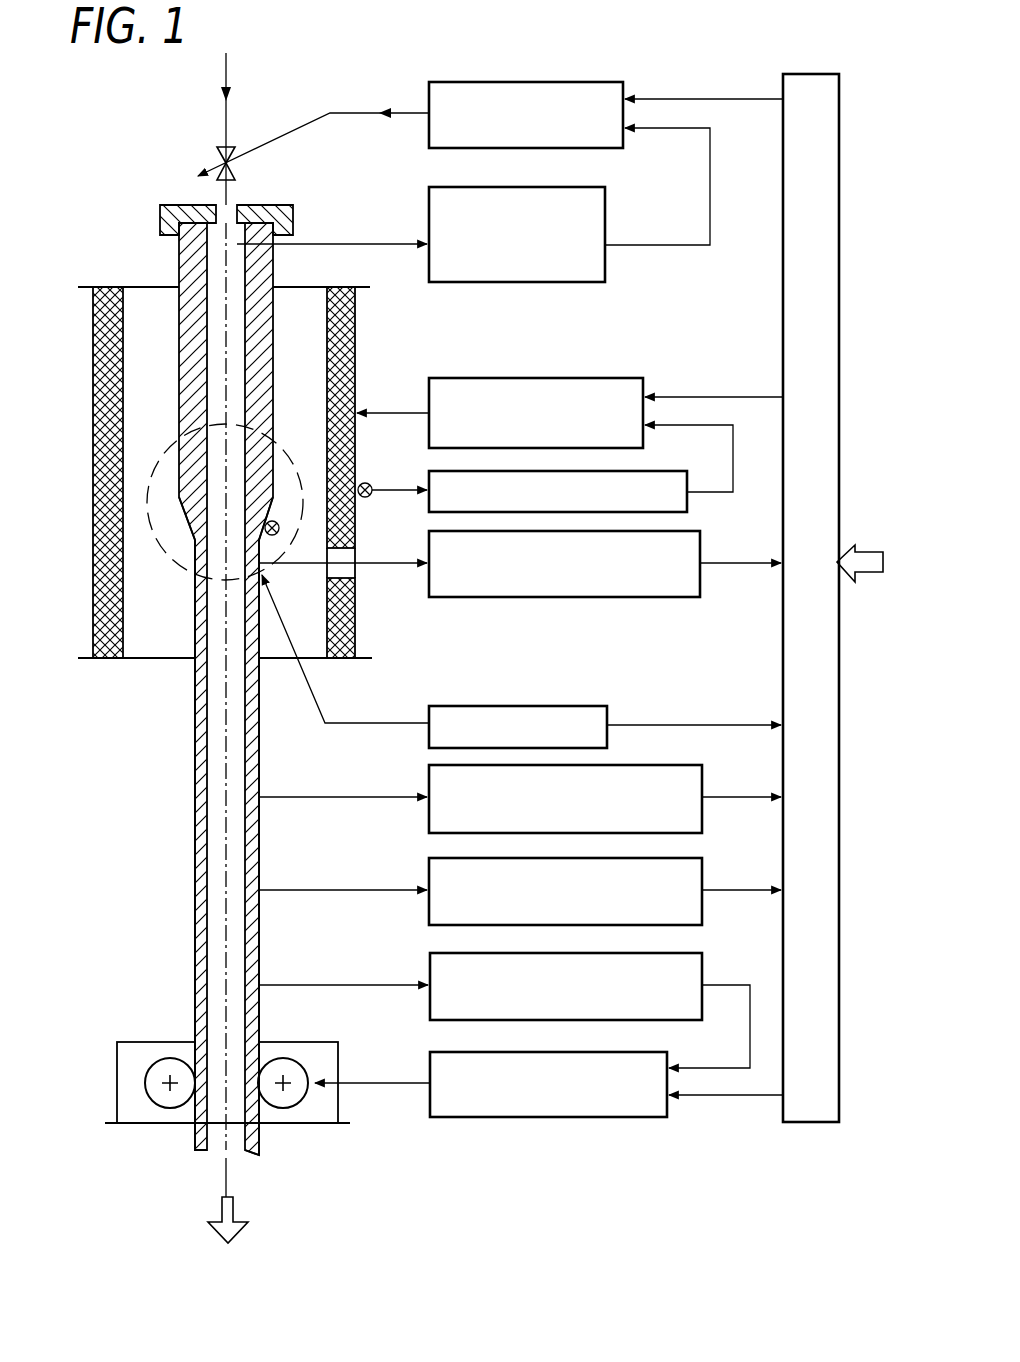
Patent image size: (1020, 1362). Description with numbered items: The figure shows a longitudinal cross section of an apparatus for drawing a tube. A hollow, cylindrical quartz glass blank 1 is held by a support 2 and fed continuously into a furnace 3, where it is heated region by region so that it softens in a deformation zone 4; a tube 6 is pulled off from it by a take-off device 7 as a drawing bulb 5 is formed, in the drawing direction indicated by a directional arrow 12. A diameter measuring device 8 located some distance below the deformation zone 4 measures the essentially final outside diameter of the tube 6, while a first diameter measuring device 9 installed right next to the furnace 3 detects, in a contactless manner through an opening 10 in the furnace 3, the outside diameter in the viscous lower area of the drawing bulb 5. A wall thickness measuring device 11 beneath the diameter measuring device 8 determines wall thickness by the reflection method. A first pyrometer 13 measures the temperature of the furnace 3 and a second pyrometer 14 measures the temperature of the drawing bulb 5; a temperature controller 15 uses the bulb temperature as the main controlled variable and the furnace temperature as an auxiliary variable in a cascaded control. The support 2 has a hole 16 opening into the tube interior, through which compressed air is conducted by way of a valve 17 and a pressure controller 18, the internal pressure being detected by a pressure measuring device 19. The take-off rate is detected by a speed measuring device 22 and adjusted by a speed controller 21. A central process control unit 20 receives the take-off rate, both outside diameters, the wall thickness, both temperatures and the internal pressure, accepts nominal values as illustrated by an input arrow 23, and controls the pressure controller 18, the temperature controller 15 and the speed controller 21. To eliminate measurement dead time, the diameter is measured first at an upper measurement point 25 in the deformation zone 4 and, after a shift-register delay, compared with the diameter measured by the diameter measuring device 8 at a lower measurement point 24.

The quartz glass blank 1 is at (188, 261).
The support 2 is at (172, 205).
The furnace 3 is at (355, 350).
The deformation zone 4 is at (178, 565).
The drawing bulb 5 is at (170, 515).
The tube 6 is at (200, 875).
The take-off device 7 is at (132, 1055).
The diameter measuring device 8 is at (702, 818).
The first diameter measuring device 9 is at (617, 597).
The opening 10 is at (348, 570).
The wall thickness measuring device 11 is at (702, 912).
The directional arrow 12 is at (225, 1215).
The first pyrometer 13 is at (690, 500).
The second pyrometer 14 is at (555, 706).
The temperature controller 15 is at (520, 378).
The hole 16 is at (233, 217).
The valve 17 is at (220, 150).
The pressure controller 18 is at (470, 82).
The pressure measuring device 19 is at (575, 282).
The central process control unit 20 is at (797, 322).
The speed controller 21 is at (537, 1117).
The speed measuring device 22 is at (665, 1020).
The input arrow 23 is at (868, 560).
The lower measurement point 24 is at (264, 806).
The upper measurement point 25 is at (276, 535).